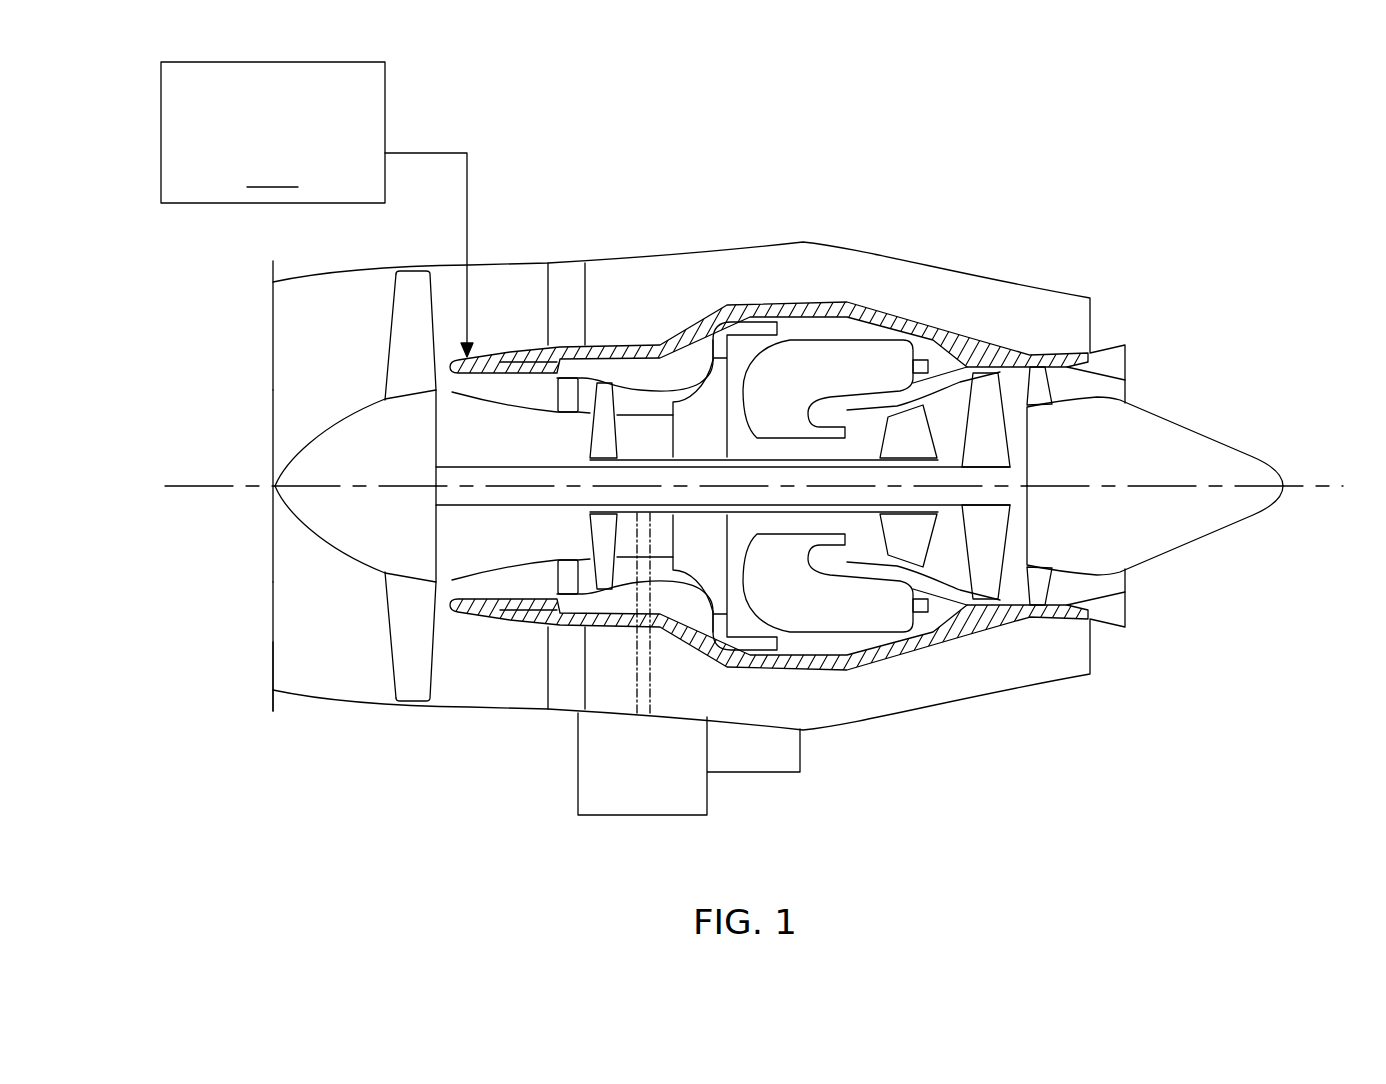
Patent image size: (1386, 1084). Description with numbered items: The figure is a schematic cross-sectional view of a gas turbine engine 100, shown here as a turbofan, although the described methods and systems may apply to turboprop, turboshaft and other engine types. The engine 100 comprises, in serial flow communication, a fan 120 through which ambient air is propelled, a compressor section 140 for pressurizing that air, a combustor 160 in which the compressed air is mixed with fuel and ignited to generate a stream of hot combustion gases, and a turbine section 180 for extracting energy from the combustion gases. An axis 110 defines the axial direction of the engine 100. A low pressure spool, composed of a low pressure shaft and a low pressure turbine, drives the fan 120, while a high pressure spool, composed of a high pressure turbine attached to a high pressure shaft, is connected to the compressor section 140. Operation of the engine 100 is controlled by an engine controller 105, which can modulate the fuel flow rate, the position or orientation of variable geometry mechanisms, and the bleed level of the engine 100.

The gas turbine engine 100 is at (970, 200).
The engine controller 105 is at (317, 209).
The axis 110 is at (233, 484).
The fan 120 is at (406, 623).
The compressor section 140 is at (636, 395).
The combustor 160 is at (830, 358).
The turbine section 180 is at (948, 547).